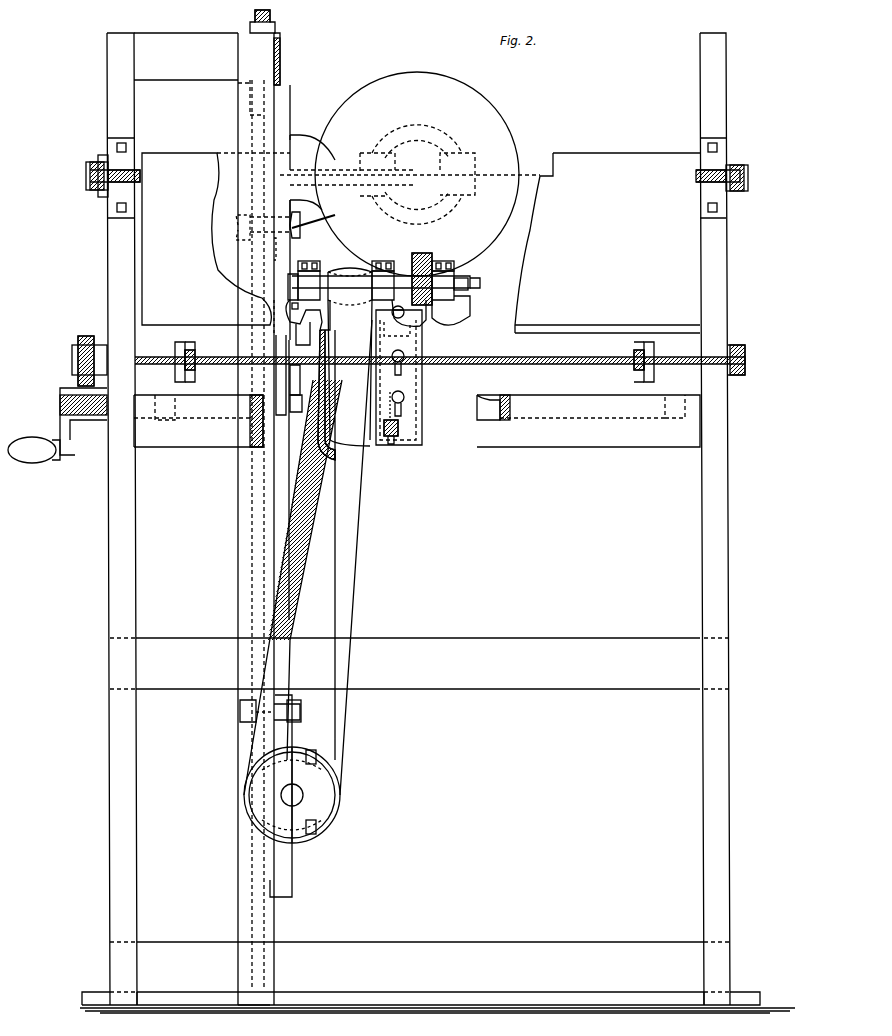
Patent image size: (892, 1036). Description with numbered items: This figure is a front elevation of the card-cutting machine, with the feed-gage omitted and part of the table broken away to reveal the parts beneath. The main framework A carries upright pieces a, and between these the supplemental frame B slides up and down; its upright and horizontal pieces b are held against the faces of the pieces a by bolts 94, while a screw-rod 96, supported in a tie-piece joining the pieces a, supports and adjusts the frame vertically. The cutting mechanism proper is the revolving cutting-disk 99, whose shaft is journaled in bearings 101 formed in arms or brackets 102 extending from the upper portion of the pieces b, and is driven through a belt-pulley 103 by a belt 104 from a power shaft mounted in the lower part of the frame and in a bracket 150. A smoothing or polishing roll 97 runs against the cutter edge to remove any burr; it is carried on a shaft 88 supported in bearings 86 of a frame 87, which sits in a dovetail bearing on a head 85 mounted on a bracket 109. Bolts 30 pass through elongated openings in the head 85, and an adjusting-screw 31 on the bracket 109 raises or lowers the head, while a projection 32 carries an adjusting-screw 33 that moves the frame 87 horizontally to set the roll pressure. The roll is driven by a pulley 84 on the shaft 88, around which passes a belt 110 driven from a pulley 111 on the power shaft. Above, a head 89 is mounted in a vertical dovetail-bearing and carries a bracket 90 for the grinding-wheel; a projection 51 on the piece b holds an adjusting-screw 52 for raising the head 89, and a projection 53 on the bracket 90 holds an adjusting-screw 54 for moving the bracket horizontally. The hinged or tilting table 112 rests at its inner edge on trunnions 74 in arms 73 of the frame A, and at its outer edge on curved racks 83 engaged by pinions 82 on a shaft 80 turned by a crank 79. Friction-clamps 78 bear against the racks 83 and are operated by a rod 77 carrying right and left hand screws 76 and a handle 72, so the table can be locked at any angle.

The main framework A is at (437, 523).
The upright pieces a is at (238, 105).
The upright and horizontal pieces b is at (282, 480).
The screw-rod 96 is at (272, 20).
The hinged or tilting table 112 is at (421, 243).
The trunnions 74 is at (128, 170).
The arms 73 is at (100, 188).
The revolving cutting-disk 99 is at (410, 174).
The bearings 101 is at (470, 160).
The arms or brackets 102 is at (310, 133).
The belt-pulley 103 is at (452, 212).
The bolts 94 is at (297, 234).
The curved racks 83 is at (468, 283).
The bearings 86 is at (316, 257).
The head 89 is at (292, 268).
The smoothing or polishing roll 97 is at (428, 262).
The pulley 84 is at (370, 298).
The bracket 109 is at (370, 456).
The frame 87 is at (455, 318).
The shaft 88 is at (468, 284).
The adjusting-screw 54 is at (300, 306).
The bracket 90 is at (303, 332).
The projection 53 is at (300, 298).
The adjusting-screw 52 is at (296, 373).
The projection 51 is at (302, 400).
The projection 32 is at (404, 312).
The adjusting-screw 33 is at (397, 329).
The head 85 is at (414, 384).
The bolts 30 is at (404, 357).
The adjusting-screw 31 is at (394, 440).
The belt 110 is at (352, 526).
The belt 104 is at (292, 798).
The pulley 111 is at (322, 762).
The bracket 150 is at (290, 880).
The rod 77 is at (548, 364).
The handle 72 is at (78, 340).
The right and left hand screws 76 is at (195, 366).
The friction-clamps 78 is at (188, 372).
The pinions 82 is at (168, 422).
The shaft 80 is at (484, 414).
The crank 79 is at (70, 455).